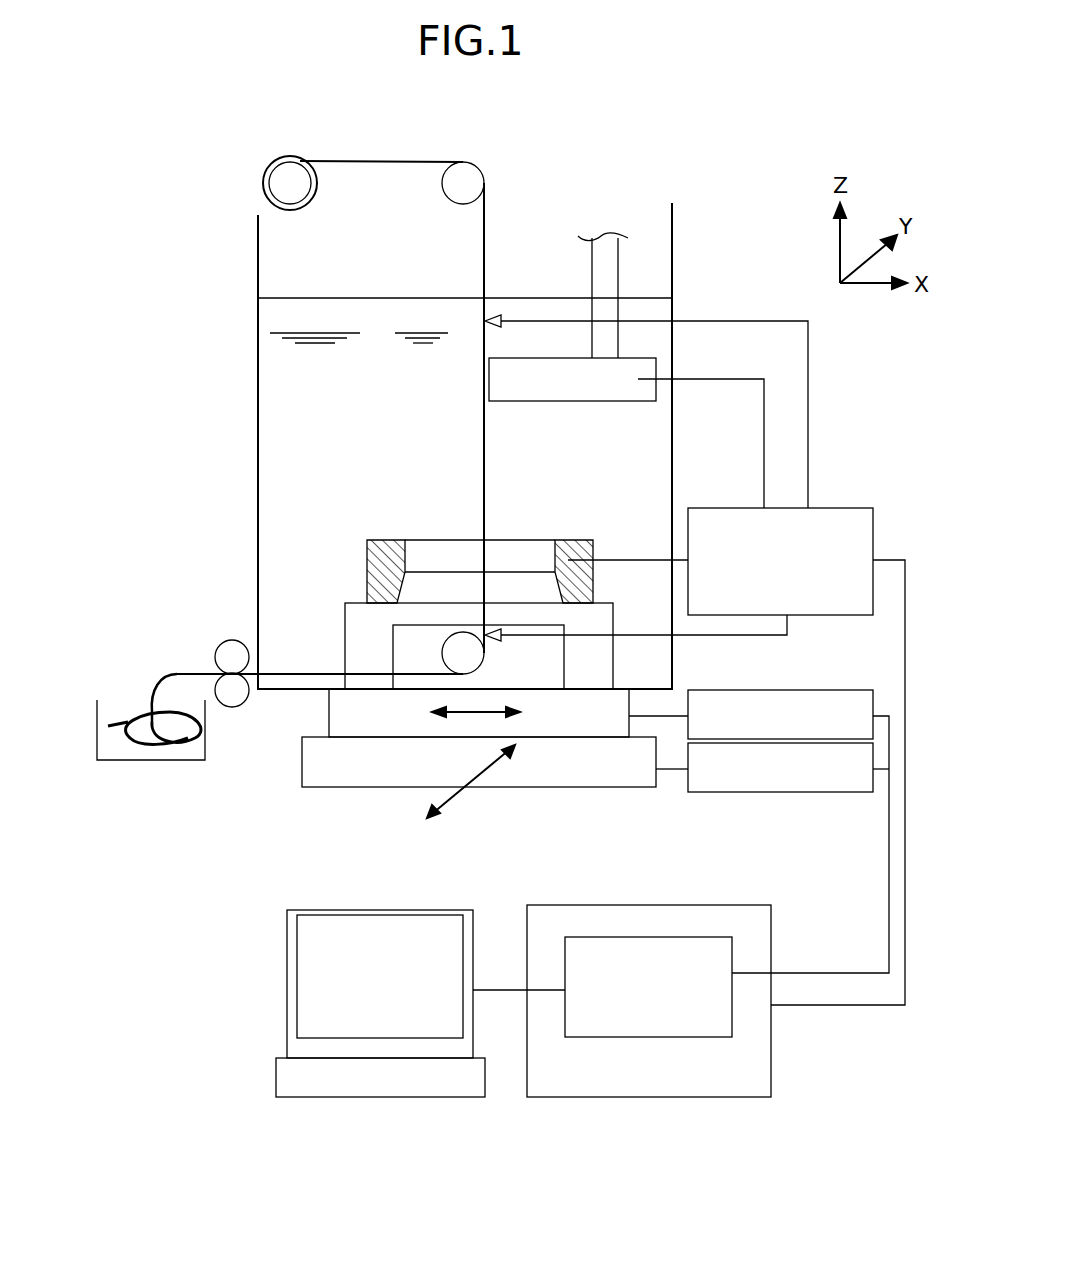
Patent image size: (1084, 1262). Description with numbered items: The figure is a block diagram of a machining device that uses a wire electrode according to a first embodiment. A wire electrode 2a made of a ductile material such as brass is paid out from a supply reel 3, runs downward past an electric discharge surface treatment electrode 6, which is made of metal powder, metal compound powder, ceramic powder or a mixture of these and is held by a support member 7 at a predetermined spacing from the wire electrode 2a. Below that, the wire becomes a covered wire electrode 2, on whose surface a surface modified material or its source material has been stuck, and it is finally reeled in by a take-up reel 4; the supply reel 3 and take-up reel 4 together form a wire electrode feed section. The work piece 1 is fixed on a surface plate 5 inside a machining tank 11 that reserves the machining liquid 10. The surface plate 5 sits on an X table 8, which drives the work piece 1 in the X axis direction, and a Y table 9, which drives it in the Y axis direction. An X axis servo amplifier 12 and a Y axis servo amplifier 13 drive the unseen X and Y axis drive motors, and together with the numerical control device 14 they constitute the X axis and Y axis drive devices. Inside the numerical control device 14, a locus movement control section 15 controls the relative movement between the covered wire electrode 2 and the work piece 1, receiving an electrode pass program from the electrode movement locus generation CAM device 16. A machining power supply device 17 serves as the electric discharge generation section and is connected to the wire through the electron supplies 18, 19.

The work piece 1 is at (367, 555).
The covered wire electrode 2 is at (484, 503).
The wire electrode 2a is at (365, 162).
The supply reel 3 is at (280, 172).
The take-up reel 4 is at (228, 652).
The surface plate 5 is at (352, 632).
The electric discharge surface treatment electrode 6 is at (540, 362).
The support member 7 is at (618, 262).
The X table 8 is at (329, 706).
The Y table 9 is at (302, 752).
The machining liquid 10 is at (370, 315).
The machining tank 11 is at (258, 427).
The X axis servo amplifier 12 is at (843, 690).
The Y axis servo amplifier 13 is at (718, 792).
The numerical control device 14 is at (762, 1043).
The locus movement control section 15 is at (595, 947).
The electrode movement locus generation CAM device 16 is at (305, 925).
The machining power supply device 17 is at (843, 508).
The electron supply 18 is at (493, 315).
The electron supply 19 is at (492, 641).